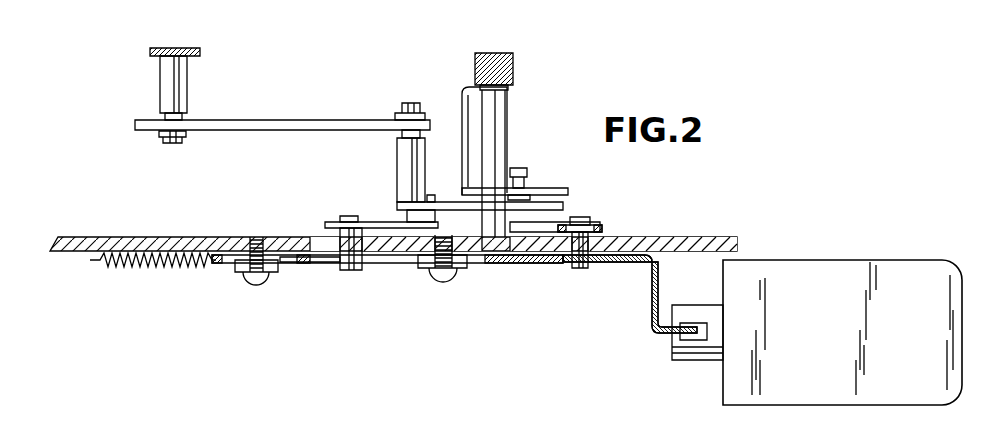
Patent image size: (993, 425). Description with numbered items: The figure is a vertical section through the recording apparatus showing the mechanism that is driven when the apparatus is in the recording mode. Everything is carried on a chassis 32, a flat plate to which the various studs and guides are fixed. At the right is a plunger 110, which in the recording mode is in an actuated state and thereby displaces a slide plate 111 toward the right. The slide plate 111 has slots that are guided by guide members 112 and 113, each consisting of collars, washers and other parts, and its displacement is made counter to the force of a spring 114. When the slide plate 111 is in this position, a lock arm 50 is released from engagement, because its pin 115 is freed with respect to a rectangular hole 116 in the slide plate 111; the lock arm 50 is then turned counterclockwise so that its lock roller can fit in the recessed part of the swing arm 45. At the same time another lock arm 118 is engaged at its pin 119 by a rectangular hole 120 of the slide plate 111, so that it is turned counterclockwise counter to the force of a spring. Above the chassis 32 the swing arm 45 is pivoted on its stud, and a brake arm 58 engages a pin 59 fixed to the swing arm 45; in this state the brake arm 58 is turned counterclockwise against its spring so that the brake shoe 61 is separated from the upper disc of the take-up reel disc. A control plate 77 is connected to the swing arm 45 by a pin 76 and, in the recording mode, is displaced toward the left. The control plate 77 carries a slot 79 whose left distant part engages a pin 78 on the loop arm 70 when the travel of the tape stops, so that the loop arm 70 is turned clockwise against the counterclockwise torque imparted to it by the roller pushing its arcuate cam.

The chassis 32 is at (712, 237).
The swing arm 45 is at (563, 205).
The lock arm 50 is at (385, 222).
The brake arm 58 is at (460, 95).
The pin 59 is at (530, 180).
The brake shoe 61 is at (515, 70).
The loop arm 70 is at (150, 58).
The pin 76 is at (398, 170).
The control plate 77 is at (297, 120).
The pin 78 is at (187, 82).
The slot 79 is at (252, 128).
The plunger 110 is at (835, 260).
The slide plate 111 is at (518, 265).
The guide member 112 is at (250, 284).
The guide member 113 is at (450, 282).
The spring 114 is at (142, 267).
The pin 115 is at (350, 272).
The rectangular hole 116 is at (320, 265).
The lock arm 118 is at (600, 224).
The pin 119 is at (574, 268).
The rectangular hole 120 is at (615, 265).